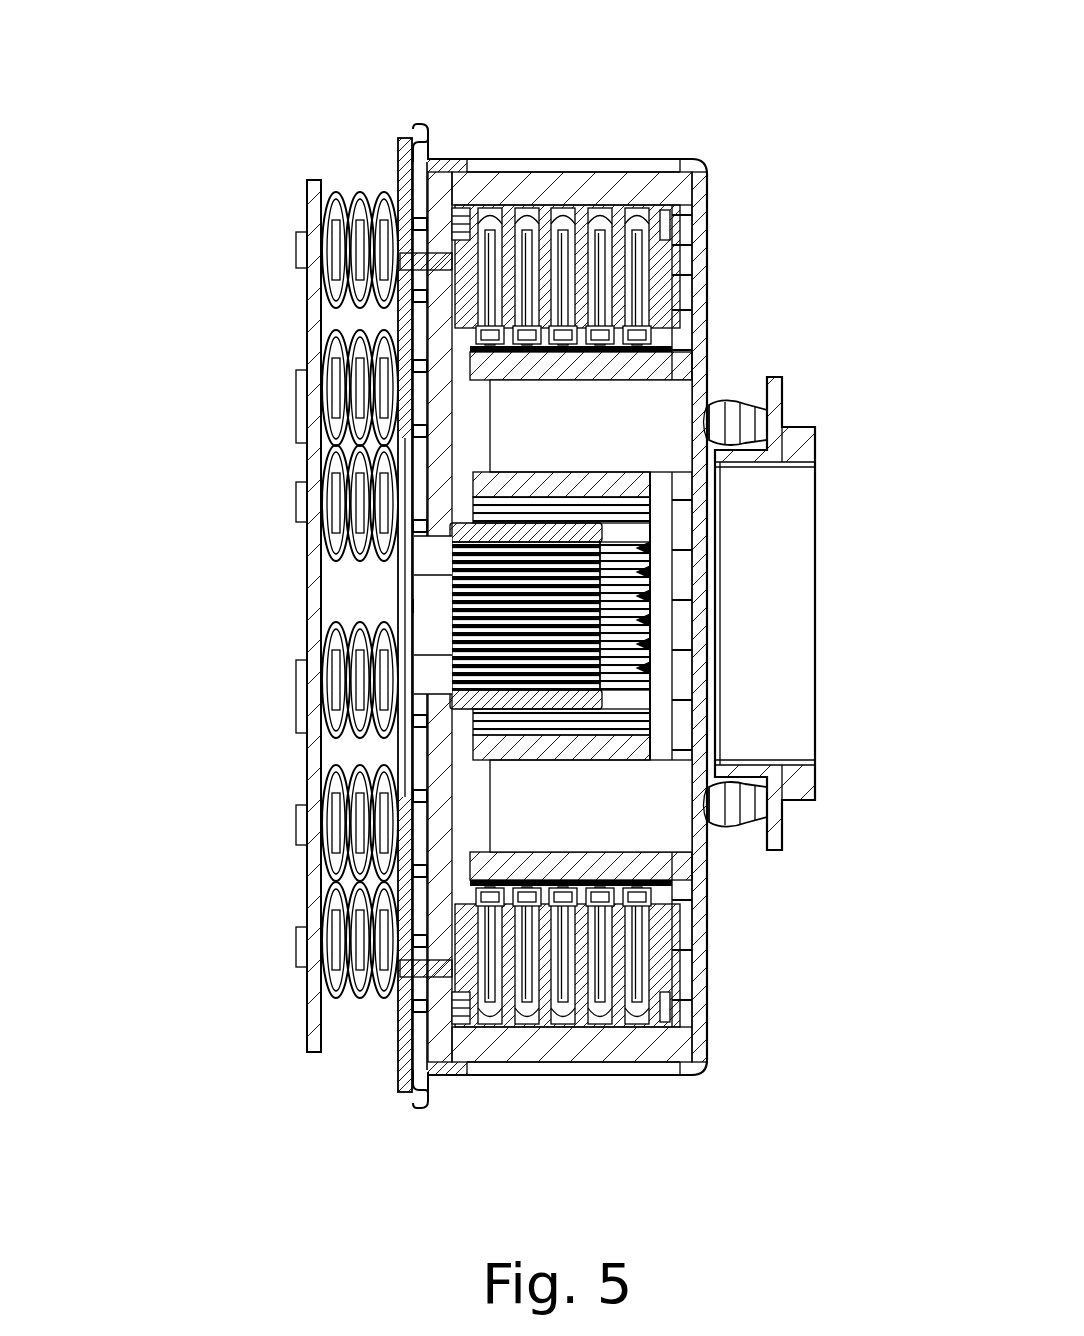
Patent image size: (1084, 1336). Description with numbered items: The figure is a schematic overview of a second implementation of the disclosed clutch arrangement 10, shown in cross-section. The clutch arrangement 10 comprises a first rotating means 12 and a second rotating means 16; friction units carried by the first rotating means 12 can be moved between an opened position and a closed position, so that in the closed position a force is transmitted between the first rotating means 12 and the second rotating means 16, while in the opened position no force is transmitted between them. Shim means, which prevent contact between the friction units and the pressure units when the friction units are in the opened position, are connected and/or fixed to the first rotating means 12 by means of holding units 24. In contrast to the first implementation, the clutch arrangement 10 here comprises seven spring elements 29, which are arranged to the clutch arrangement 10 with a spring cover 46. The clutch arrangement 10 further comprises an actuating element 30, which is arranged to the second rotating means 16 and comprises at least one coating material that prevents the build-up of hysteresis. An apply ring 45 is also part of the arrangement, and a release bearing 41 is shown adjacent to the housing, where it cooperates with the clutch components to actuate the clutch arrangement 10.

The clutch arrangement 10 is at (160, 448).
The first rotating means 12 is at (602, 159).
The second rotating means 16 is at (670, 373).
The holding units 24 is at (607, 1063).
The spring elements 29 is at (333, 752).
The actuating element 30 is at (437, 158).
The release bearing 41 is at (797, 604).
The apply ring 45 is at (403, 136).
The spring cover 46 is at (310, 1033).